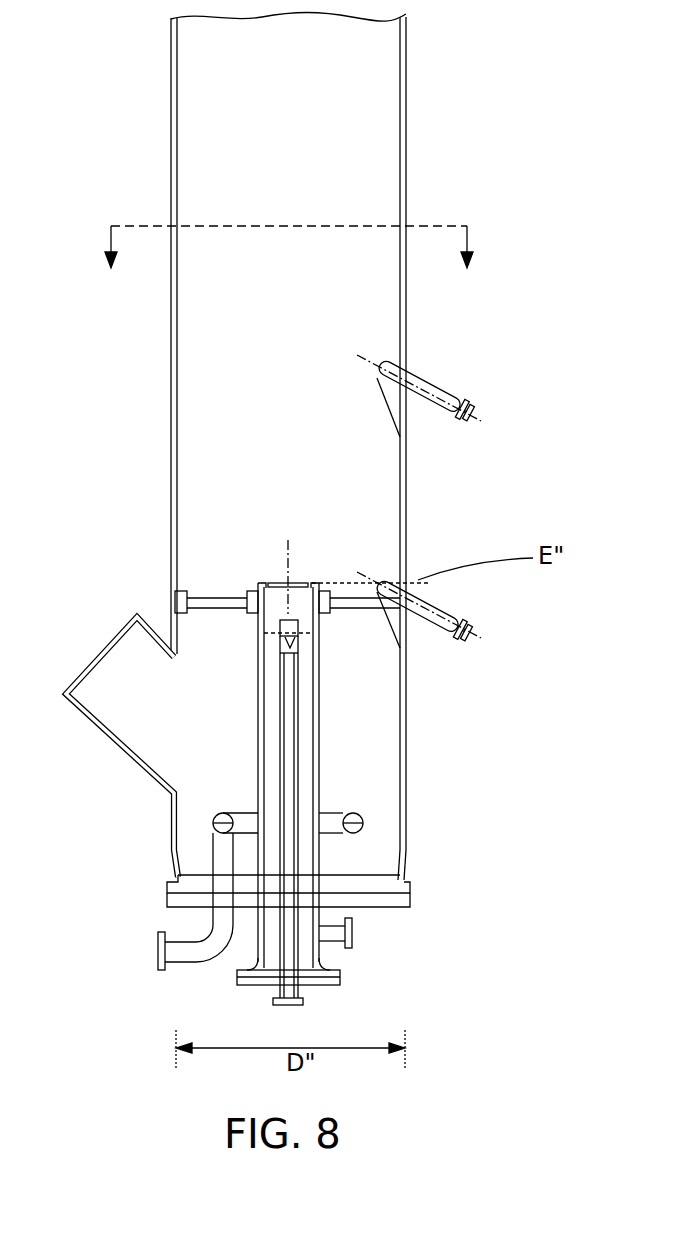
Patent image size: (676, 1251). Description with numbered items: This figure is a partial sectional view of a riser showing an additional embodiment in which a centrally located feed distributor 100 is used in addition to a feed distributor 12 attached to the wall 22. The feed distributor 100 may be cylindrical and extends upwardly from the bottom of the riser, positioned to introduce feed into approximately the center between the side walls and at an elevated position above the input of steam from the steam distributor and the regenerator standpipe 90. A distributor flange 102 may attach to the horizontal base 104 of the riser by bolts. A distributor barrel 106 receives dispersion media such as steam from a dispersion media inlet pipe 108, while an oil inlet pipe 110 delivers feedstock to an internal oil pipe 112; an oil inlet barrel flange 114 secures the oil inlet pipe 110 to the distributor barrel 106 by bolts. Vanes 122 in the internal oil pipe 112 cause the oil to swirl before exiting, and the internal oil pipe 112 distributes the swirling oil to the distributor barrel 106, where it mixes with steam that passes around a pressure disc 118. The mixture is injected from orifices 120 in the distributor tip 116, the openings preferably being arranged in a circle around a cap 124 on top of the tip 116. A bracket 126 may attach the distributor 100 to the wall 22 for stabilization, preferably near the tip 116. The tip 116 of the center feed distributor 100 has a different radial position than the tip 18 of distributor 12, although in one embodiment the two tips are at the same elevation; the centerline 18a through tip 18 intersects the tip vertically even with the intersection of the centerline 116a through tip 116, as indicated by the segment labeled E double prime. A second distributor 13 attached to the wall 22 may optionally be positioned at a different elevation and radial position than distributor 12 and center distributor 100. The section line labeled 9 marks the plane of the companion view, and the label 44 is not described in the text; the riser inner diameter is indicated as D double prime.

The wall 22 is at (180, 146).
The section line 9- 9 is at (290, 232).
The second distributor 13 is at (438, 385).
The nozzle support bracket 44 is at (397, 410).
The feed distributor 12 is at (440, 600).
The centerline 18a is at (478, 628).
The tip 18 is at (378, 582).
The cap 124 is at (293, 580).
The orifices 120 is at (311, 580).
The tip 116 is at (320, 580).
The bracket 126 is at (358, 587).
The centerline 116a is at (287, 554).
The distributor barrel 106 is at (322, 742).
The internal oil pipe 112 is at (298, 779).
The pressure disc 118 is at (300, 636).
The vanes 122 is at (293, 646).
The regenerator standpipe 90 is at (90, 722).
The feed distributor 100 is at (238, 735).
The horizontal base 104 is at (407, 880).
The distributor flange 102 is at (412, 903).
The dispersion media inlet pipe 108 is at (355, 933).
The oil inlet barrel flange 114 is at (255, 986).
The oil inlet pipe 110 is at (290, 1006).